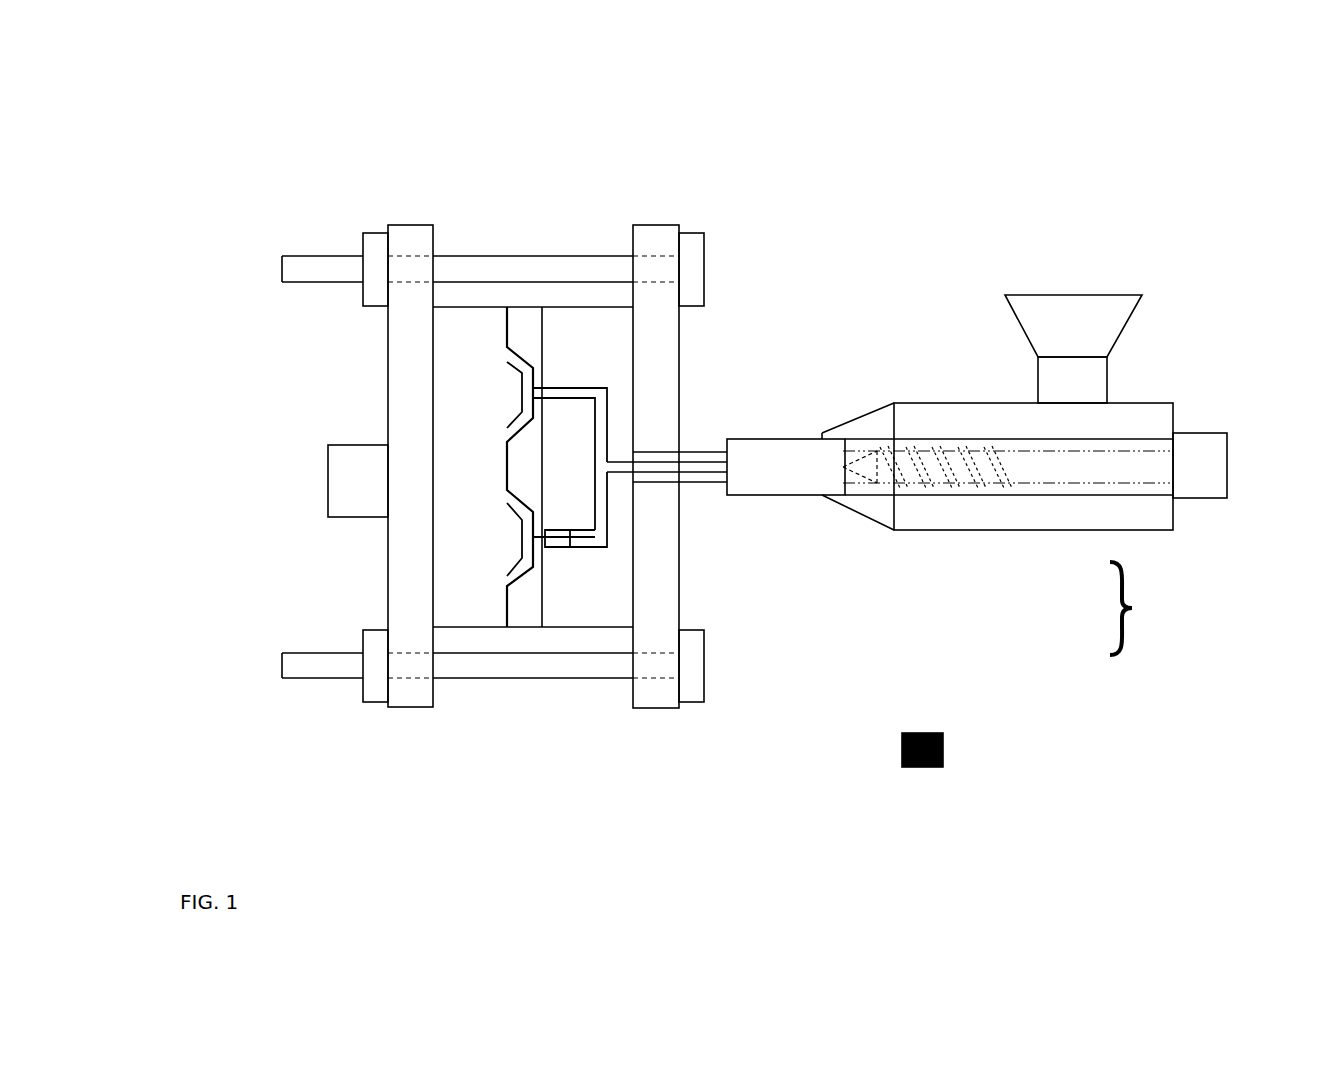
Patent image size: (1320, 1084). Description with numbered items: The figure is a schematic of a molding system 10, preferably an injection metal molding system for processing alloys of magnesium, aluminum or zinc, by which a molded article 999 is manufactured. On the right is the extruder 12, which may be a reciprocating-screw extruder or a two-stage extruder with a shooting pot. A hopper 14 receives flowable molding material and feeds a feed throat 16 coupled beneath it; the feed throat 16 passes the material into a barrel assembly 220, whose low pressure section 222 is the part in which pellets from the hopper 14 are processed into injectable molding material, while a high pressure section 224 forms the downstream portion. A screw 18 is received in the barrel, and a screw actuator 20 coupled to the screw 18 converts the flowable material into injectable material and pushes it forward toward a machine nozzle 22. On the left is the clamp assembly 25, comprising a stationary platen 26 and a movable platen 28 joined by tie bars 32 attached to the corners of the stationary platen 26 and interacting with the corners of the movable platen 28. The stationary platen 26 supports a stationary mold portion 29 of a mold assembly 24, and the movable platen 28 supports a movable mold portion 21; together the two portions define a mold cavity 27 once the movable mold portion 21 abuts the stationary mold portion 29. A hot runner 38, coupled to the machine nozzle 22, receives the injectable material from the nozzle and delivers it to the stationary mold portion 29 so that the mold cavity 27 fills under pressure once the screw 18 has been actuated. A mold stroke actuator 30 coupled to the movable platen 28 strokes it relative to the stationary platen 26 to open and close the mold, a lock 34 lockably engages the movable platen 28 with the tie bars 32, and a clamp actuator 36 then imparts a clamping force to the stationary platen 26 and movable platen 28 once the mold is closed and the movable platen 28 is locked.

The molding system 10 is at (1130, 158).
The extruder 12 is at (1174, 372).
The hopper 14 is at (1060, 334).
The feed throat 16 is at (1060, 394).
The screw 18 is at (1072, 478).
The screw actuator 20 is at (1191, 478).
The movable mold portion 21 is at (455, 361).
The machine nozzle 22 is at (698, 457).
The mold assembly 24 is at (468, 320).
The clamp assembly 25 is at (668, 800).
The stationary platen 26 is at (656, 709).
The mold cavity 27 is at (521, 366).
The movable platen 28 is at (410, 708).
The stationary mold portion 29 is at (511, 346).
The mold stroke actuator 30 is at (344, 498).
The tie bars 32 is at (280, 268).
The lock 34 is at (376, 232).
The clamp actuator 36 is at (705, 270).
The hot runner 38 is at (578, 350).
The barrel assembly 220 is at (1119, 666).
The low pressure section 222 is at (1008, 496).
The high pressure section 224 is at (802, 496).
The molded article 999 is at (923, 770).